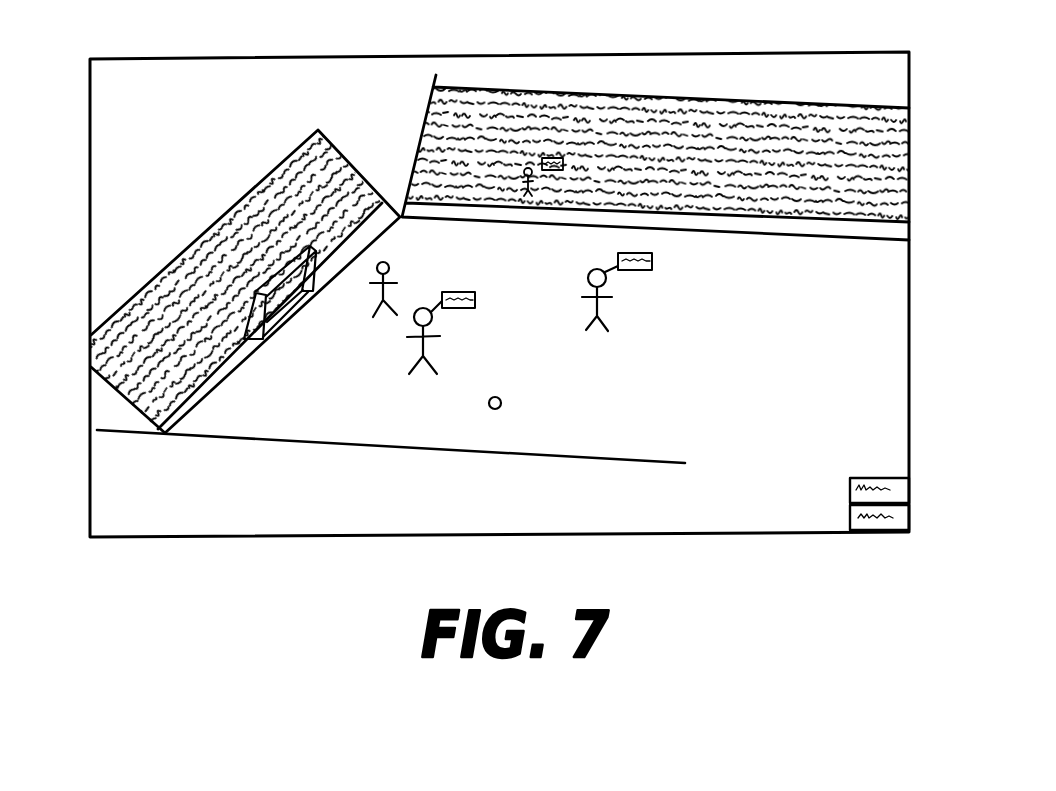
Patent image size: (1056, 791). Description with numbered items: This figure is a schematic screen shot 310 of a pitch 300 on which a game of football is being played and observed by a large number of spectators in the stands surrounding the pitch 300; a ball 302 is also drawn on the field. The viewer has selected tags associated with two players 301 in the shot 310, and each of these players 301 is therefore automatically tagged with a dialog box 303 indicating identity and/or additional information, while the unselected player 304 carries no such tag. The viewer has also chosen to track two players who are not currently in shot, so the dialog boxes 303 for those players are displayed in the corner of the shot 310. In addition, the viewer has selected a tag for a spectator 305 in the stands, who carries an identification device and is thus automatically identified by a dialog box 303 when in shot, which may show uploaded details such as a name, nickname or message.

The pitch 300 is at (280, 412).
The players 301 is at (414, 349).
The ball 302 is at (502, 404).
The dialog box 303 is at (563, 160).
The player 304 is at (398, 294).
The spectator 305 is at (528, 167).
The screen shot 310 is at (909, 285).